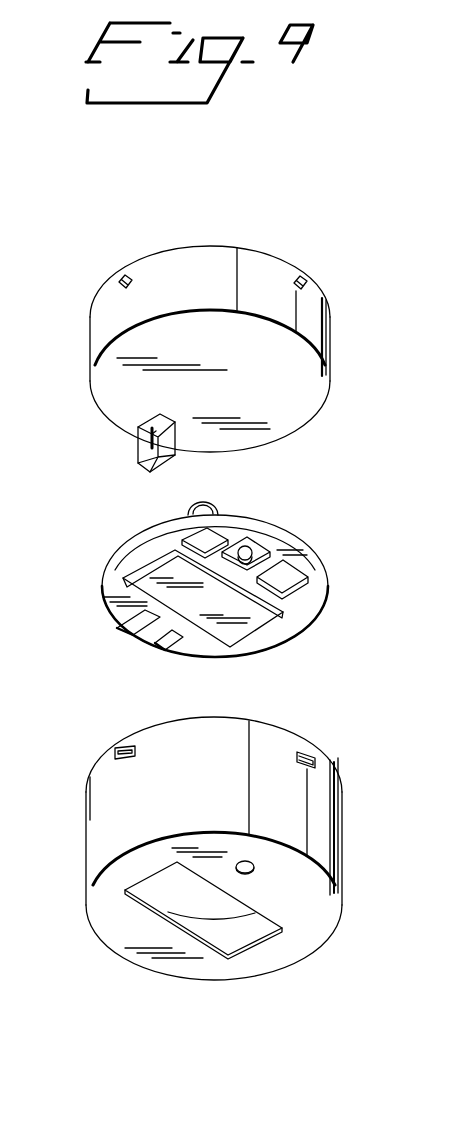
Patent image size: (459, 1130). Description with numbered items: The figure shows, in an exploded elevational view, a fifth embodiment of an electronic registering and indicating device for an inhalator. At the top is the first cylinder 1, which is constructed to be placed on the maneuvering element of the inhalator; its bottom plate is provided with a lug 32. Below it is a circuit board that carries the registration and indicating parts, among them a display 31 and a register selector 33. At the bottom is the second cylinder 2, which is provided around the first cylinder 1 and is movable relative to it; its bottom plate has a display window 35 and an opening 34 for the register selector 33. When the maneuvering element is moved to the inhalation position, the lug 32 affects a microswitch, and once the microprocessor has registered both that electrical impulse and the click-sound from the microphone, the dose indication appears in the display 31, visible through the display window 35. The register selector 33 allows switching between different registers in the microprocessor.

The first cylinder 1 is at (290, 252).
The second cylinder 2 is at (323, 740).
The display 31 is at (253, 623).
The lug 32 is at (140, 447).
The register selector 33 is at (250, 549).
The opening 34 is at (254, 867).
The display window 35 is at (232, 940).